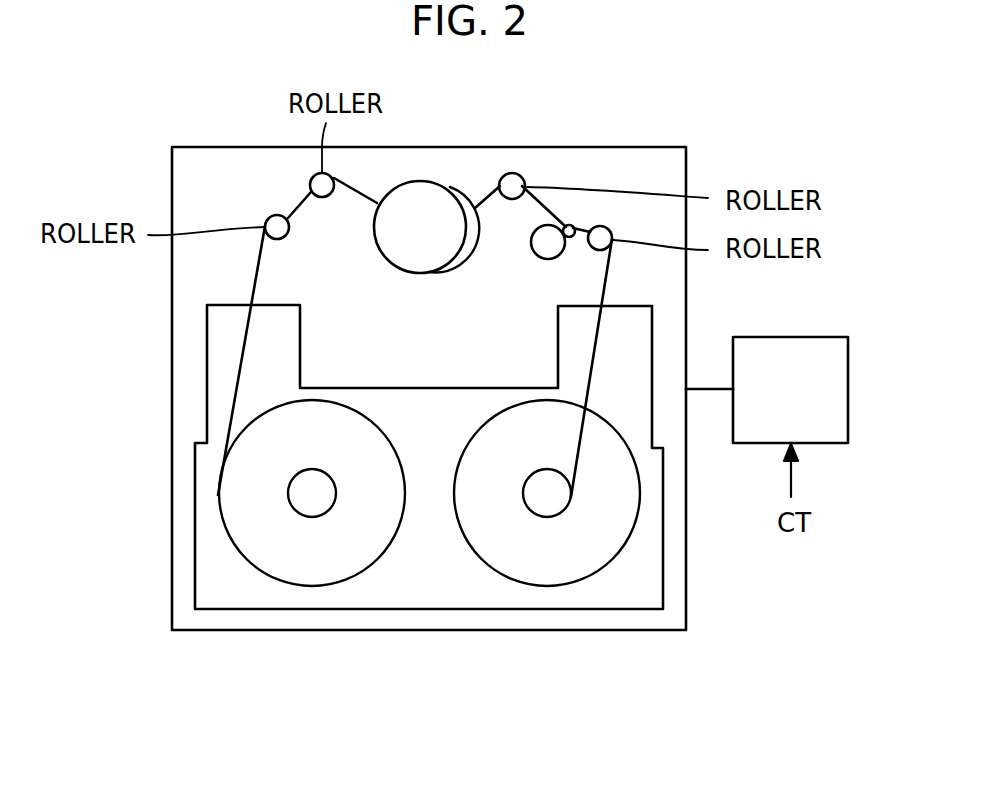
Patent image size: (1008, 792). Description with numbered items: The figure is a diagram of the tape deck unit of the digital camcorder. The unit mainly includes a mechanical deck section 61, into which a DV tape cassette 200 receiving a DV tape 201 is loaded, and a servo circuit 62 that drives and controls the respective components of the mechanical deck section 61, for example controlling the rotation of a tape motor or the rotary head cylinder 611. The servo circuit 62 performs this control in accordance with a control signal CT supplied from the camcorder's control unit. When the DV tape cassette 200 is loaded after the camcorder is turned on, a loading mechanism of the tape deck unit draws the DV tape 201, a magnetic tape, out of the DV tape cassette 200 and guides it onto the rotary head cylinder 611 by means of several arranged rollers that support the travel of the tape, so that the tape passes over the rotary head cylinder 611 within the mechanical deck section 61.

The mechanical deck section 61 is at (171, 451).
The servo circuit 62 is at (777, 334).
The DV tape cassette 200 is at (663, 569).
The DV tape 201 is at (257, 278).
The rotary head cylinder 611 is at (420, 200).